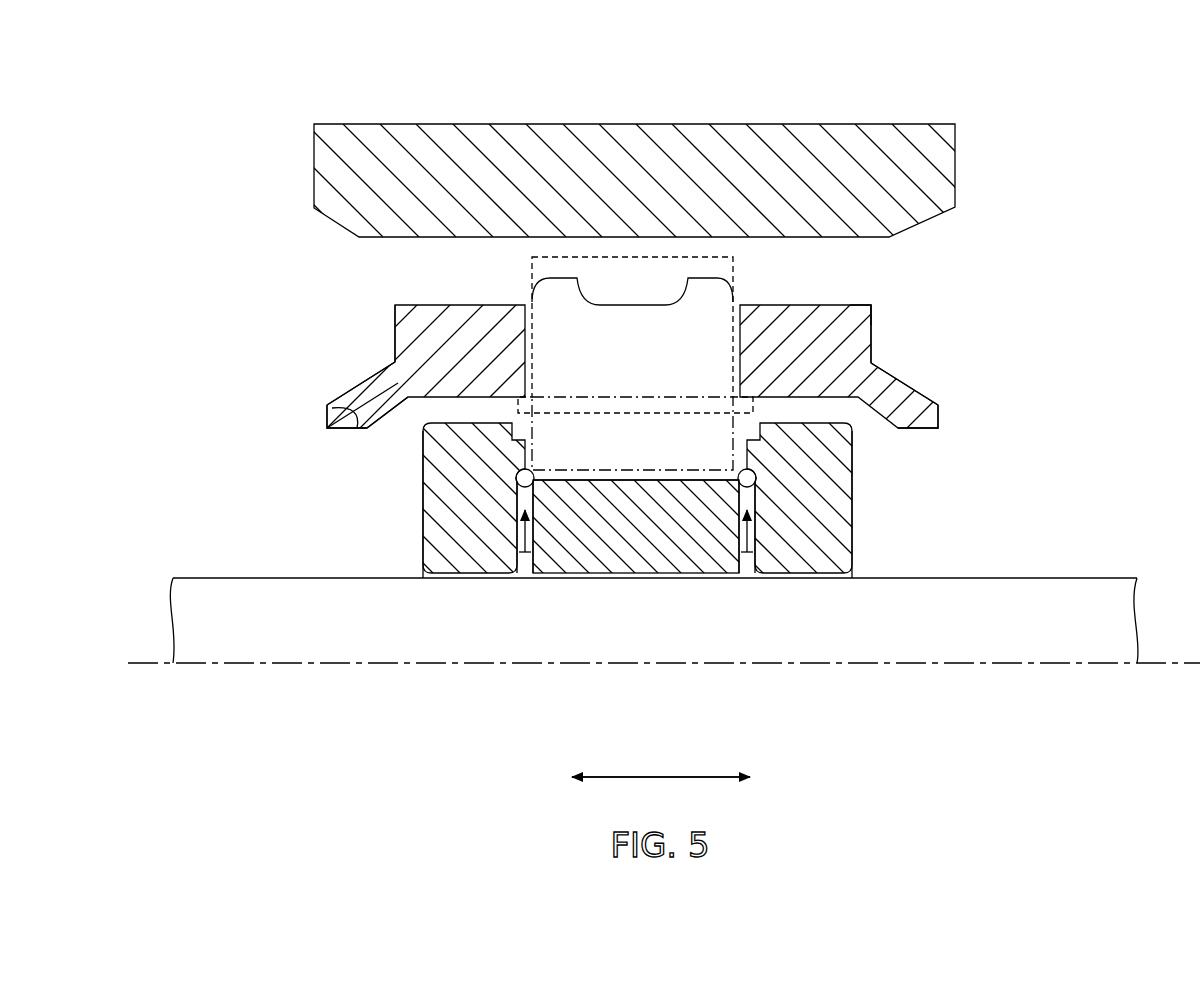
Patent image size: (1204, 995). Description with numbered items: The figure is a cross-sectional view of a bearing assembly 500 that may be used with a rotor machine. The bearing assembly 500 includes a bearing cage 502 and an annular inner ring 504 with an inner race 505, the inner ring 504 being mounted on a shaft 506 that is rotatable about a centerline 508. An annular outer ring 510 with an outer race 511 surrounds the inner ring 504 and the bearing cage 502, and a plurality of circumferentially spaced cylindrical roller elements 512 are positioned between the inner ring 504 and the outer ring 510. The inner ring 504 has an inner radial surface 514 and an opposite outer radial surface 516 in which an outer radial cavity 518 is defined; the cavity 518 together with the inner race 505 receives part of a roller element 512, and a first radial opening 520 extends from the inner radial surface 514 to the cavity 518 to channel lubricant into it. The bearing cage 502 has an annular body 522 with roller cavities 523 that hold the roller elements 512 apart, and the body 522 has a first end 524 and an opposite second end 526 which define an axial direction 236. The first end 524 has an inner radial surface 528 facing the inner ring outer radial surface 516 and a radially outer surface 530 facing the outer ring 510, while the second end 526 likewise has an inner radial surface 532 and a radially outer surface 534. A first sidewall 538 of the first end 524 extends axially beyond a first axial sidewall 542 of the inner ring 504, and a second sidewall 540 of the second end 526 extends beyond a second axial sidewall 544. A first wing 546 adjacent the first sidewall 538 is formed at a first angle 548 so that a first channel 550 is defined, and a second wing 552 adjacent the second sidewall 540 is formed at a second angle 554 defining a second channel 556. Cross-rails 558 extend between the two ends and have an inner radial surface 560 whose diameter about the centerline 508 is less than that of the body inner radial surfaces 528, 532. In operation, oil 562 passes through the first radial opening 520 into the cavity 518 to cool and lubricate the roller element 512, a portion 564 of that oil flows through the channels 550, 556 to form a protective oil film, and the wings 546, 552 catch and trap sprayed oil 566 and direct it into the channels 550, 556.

The bearing assembly 500 is at (887, 96).
The bearing cage 502 is at (920, 273).
The annular inner ring 504 is at (977, 489).
The inner race 505 is at (612, 462).
The shaft 506 is at (1047, 578).
The centerline 508 is at (1180, 660).
The annular outer ring 510 is at (635, 124).
The outer race 511 is at (632, 291).
The cylindrical roller elements 512 is at (733, 265).
The inner radial surface 514 is at (665, 578).
The outer radial surface 516 is at (423, 478).
The outer radial cavity 518 is at (618, 448).
The first radial opening 520 is at (512, 545).
The annular body 522 is at (872, 305).
The roller cavities 523 is at (567, 328).
The first end 524 is at (380, 297).
The second end 526 is at (873, 294).
The inner radial surface 528 is at (368, 435).
The radially outer surface 530 is at (428, 305).
The inner radial surface 532 is at (808, 425).
The radially outer surface 534 is at (835, 305).
The first sidewall 538 is at (395, 320).
The second sidewall 540 is at (871, 338).
The first axial sidewall 542 is at (423, 545).
The second axial sidewall 544 is at (852, 548).
The first wing 546 is at (363, 384).
The first angle 548 is at (332, 410).
The first channel 550 is at (445, 407).
The second wing 552 is at (918, 412).
The second angle 554 is at (910, 428).
The second channel 556 is at (837, 410).
The cross-rails 558 is at (647, 408).
The inner radial surface 560 is at (555, 408).
The oil 562 is at (525, 555).
The portion of oil 564 is at (485, 409).
The oil 566 is at (349, 506).
The axial direction 236 is at (663, 775).